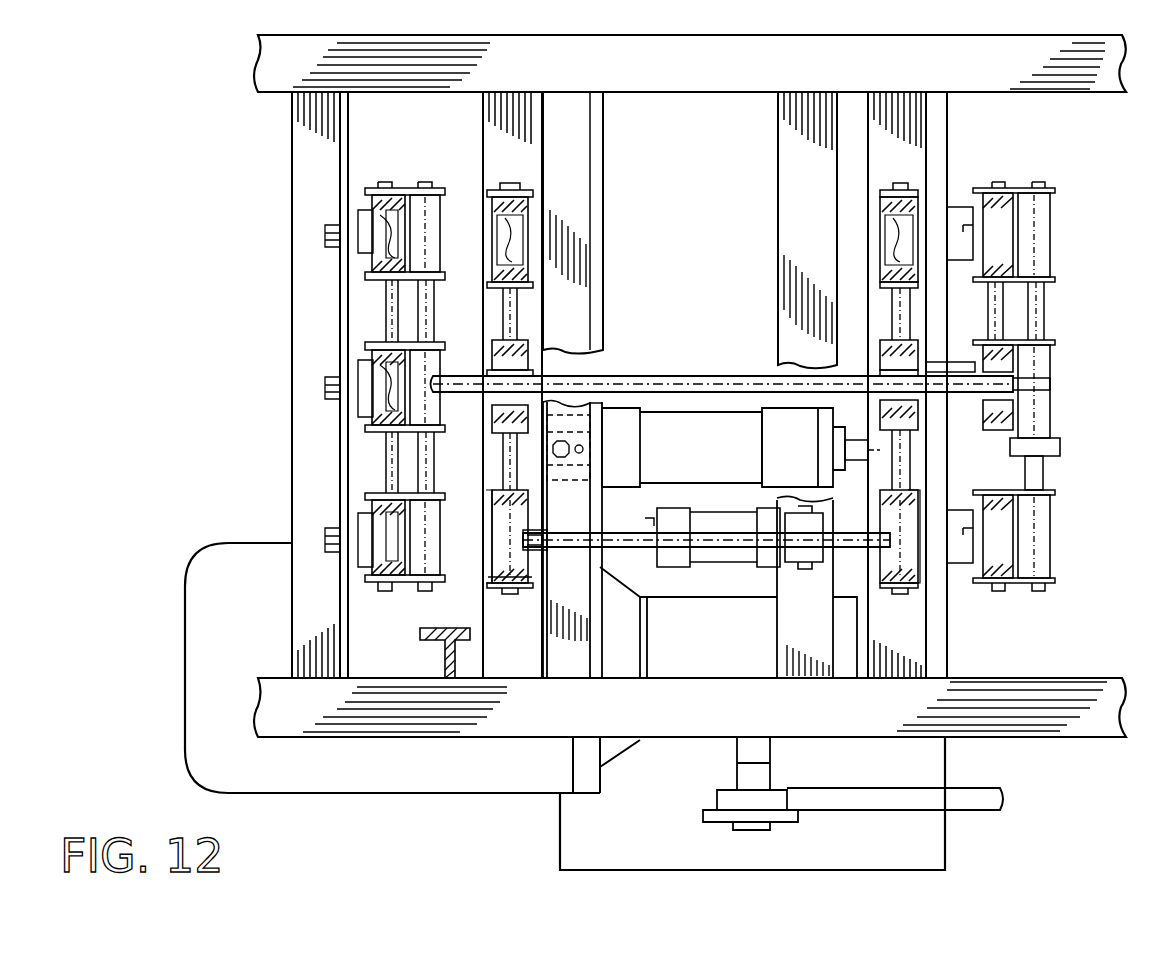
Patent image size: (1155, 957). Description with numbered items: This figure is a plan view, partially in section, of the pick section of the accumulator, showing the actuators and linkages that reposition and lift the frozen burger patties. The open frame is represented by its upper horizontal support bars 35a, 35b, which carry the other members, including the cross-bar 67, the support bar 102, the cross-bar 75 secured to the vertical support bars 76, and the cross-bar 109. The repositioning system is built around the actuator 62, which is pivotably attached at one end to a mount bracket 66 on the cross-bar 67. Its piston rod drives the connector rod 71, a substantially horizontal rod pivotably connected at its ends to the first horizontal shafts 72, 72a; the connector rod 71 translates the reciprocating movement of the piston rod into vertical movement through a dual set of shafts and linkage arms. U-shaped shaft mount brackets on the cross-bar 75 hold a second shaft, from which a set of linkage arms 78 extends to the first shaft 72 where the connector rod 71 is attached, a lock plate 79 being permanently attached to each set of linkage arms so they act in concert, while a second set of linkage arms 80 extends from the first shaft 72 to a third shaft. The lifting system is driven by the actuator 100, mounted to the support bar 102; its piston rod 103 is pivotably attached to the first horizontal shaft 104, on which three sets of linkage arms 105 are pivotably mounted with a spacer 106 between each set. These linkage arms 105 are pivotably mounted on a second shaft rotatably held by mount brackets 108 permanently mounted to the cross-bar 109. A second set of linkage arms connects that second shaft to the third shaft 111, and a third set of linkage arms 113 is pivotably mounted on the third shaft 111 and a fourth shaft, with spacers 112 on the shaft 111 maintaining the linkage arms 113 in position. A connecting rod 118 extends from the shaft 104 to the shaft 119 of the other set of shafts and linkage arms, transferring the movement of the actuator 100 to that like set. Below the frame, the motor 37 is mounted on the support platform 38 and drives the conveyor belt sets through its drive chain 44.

The upper horizontal support bar 35b is at (734, 73).
The upper horizontal support bar 35a is at (845, 720).
The support bar 102 is at (580, 148).
The cross-bar 67 is at (822, 213).
The spacers 112 is at (1003, 233).
The shaft 119 is at (425, 300).
The connecting rod 118 is at (741, 383).
The third set of linkage arms 113 is at (1015, 352).
The third shaft 111 is at (1050, 447).
The first horizontal shaft 104 is at (1035, 470).
The linkage arms 105 is at (1053, 492).
The spacer 106 is at (1040, 525).
The mount brackets 108 is at (965, 573).
The actuator 100 is at (695, 447).
The piston rod 103 is at (845, 444).
The first horizontal shaft 72a is at (760, 468).
The first horizontal shaft 72 is at (512, 455).
The connector rod 71 is at (647, 545).
The second set of linkage arms 80 is at (497, 560).
The actuator 62 is at (745, 553).
The mount bracket 66 is at (790, 548).
The linkage arms 78 is at (908, 575).
The lock plate 79 is at (495, 577).
The vertical support bars 76 is at (445, 632).
The cross-bar 75 is at (530, 637).
The cross-bar 109 is at (915, 637).
The motor 37 is at (400, 783).
The support platform 38 is at (640, 843).
The drive chain 44 is at (925, 797).